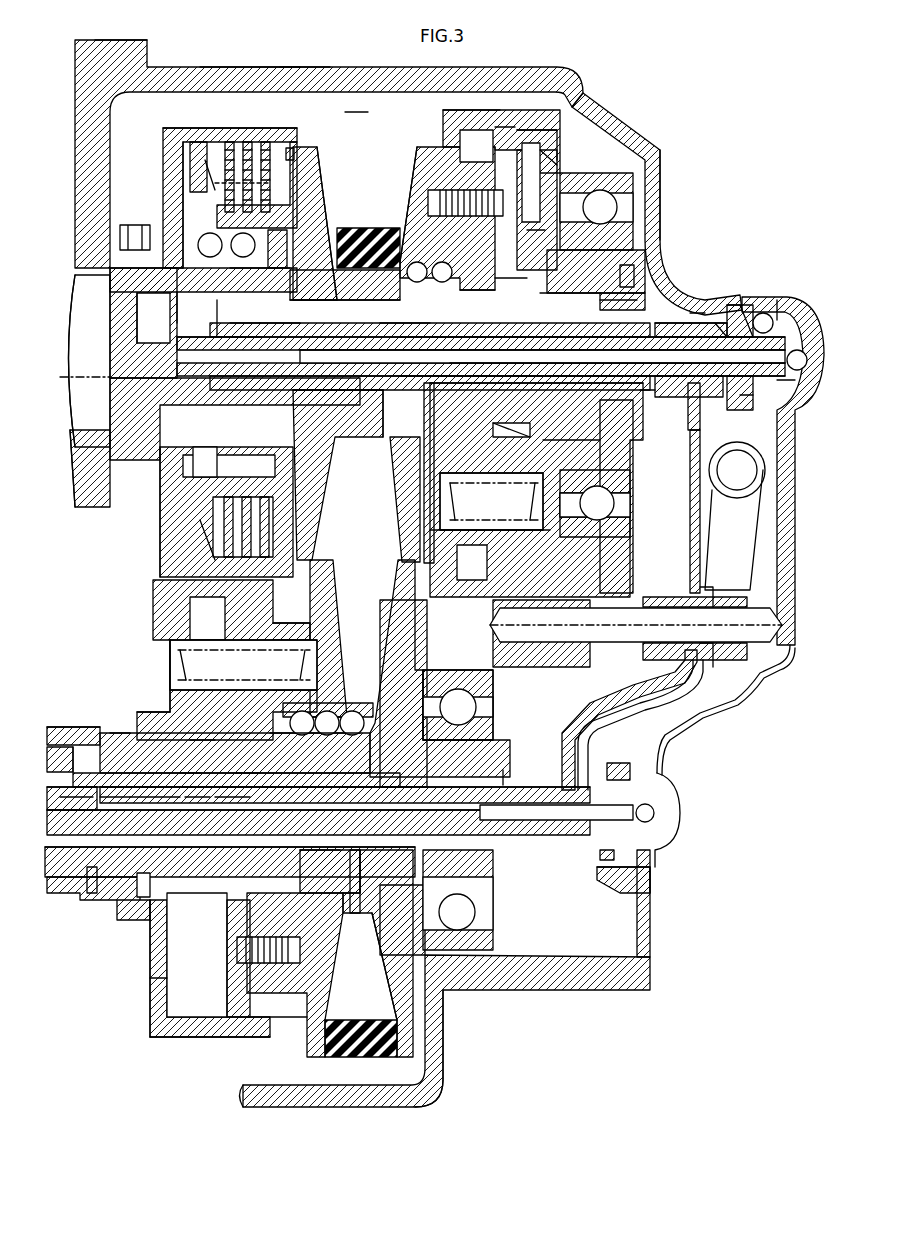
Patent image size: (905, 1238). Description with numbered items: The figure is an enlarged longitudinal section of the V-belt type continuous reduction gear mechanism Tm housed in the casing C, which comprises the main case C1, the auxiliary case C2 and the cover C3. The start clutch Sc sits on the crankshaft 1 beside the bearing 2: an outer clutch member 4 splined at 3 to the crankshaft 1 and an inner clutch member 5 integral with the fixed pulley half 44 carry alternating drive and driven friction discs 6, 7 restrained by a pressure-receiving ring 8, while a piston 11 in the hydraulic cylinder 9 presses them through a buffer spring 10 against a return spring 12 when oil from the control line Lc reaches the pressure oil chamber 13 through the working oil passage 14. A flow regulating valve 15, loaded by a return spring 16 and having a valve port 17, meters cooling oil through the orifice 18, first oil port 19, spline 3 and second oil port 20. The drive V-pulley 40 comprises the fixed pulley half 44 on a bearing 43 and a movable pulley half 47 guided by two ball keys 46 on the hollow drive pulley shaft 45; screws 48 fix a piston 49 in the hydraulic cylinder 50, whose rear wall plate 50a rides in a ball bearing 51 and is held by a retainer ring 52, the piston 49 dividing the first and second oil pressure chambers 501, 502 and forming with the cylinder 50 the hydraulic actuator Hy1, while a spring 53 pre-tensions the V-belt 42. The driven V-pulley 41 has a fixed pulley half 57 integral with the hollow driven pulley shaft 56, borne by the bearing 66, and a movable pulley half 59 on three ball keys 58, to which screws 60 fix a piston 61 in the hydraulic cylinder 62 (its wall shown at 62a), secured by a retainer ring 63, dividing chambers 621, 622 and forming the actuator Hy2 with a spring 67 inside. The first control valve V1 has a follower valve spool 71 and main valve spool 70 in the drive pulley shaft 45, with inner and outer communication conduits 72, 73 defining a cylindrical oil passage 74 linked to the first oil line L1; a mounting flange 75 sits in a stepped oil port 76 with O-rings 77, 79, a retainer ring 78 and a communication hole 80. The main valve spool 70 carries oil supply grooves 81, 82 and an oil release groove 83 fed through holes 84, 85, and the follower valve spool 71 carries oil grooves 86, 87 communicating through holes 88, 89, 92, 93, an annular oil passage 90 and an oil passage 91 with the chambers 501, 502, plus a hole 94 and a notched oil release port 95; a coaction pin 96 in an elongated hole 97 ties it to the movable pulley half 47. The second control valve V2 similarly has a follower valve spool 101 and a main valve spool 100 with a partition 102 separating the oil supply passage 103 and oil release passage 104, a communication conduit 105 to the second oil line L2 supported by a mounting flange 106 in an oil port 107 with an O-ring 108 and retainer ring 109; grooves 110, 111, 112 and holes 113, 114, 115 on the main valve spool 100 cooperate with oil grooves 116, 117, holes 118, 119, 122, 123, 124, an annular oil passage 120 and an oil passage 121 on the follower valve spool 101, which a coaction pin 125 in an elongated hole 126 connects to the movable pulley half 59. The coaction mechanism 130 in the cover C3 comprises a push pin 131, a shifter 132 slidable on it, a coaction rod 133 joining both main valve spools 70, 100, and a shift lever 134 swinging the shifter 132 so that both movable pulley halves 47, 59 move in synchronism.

The main case C1 is at (125, 42).
The auxiliary case C2 is at (245, 70).
The casing C is at (288, 68).
The cover C3 is at (661, 180).
The continuous reduction gear mechanism Tm is at (356, 112).
The hydraulic actuator Hy1 is at (558, 110).
The hydraulic actuator Hy2 is at (148, 978).
The start clutch Sc is at (275, 128).
The first control valve V1 is at (688, 305).
The second control valve V2 is at (514, 780).
The first oil line L1 is at (775, 305).
The second oil line L2 is at (656, 816).
The control line Lc is at (805, 352).
The crankshaft 1 is at (91, 362).
The bearing 2 is at (79, 468).
The spline 3 is at (275, 330).
The outer clutch member 4 is at (196, 142).
The inner clutch member 5 is at (283, 228).
The drive friction discs 6 is at (265, 142).
The driven friction discs 7 is at (266, 183).
The pressure-receiving ring 8 is at (294, 153).
The hydraulic cylinder 9 is at (210, 165).
The dish-shaped buffer spring 10 is at (210, 540).
The piston 11 is at (183, 470).
The return spring 12 is at (207, 262).
The pressure oil chamber 13 is at (183, 183).
The working oil passage 14 is at (160, 360).
The flow regulating valve 15 is at (195, 310).
The return spring 16 is at (330, 400).
The valve port 17 is at (210, 352).
The orifice 18 is at (222, 318).
The first oil port 19 is at (243, 325).
The second oil port 20 is at (240, 283).
The drive V-pulley 40 is at (462, 108).
The driven V-pulley 41 is at (440, 1013).
The V-belt 42 is at (365, 228).
The bearing 43 is at (330, 290).
The fixed pulley half 44 is at (320, 187).
The drive pulley shaft 45 is at (410, 282).
The ball keys 46 is at (438, 283).
The movable pulley half 47 is at (415, 178).
The screws 48 is at (466, 217).
The piston 49 is at (503, 127).
The hydraulic cylinder 50 is at (512, 135).
The first oil pressure chamber 501 is at (486, 157).
The second oil pressure chamber 502 is at (533, 230).
The rear wall plate 50a is at (555, 160).
The ball bearing 51 is at (597, 250).
The retainer ring 52 is at (630, 283).
The spring 53 is at (443, 475).
The driven pulley shaft 56 is at (160, 890).
The fixed pulley half 57 is at (376, 960).
The ball keys 58 is at (327, 711).
The movable pulley half 59 is at (333, 988).
The screws 60 is at (275, 937).
The piston 61 is at (227, 998).
The hydraulic cylinder 62 is at (175, 1037).
The first oil pressure chamber 621 is at (256, 1020).
The second oil pressure chamber 622 is at (211, 940).
The cylinder flange 62a is at (152, 957).
The retainer ring 63 is at (92, 894).
The bearing 66 is at (460, 690).
The spring 67 is at (300, 625).
The main valve spool 70 is at (674, 325).
The follower valve spool 71 is at (658, 323).
The inner communication conduit 72 is at (405, 327).
The outer communication conduit 73 is at (716, 325).
The cylindrical oil passage 74 is at (688, 400).
The mounting flange 75 is at (752, 398).
The stepped oil port 76 is at (748, 305).
The O-ring 77 is at (743, 410).
The retainer ring 78 is at (735, 305).
The O-ring 79 is at (790, 385).
The communication hole 80 is at (772, 327).
The left oil supply groove 81 is at (465, 352).
The right oil supply groove 82 is at (575, 352).
The oil release groove 83 is at (625, 352).
The hole 84 is at (500, 352).
The hole 85 is at (592, 430).
The left oil groove 86 is at (508, 290).
The right oil groove 87 is at (575, 290).
The hole 88 is at (478, 290).
The hole 89 is at (490, 415).
The annular oil passage 90 is at (545, 420).
The oil passage 91 is at (490, 505).
The hole 92 is at (625, 305).
The hole 93 is at (565, 420).
The hole 94 is at (550, 290).
The notched oil release port 95 is at (646, 398).
The coaction pin 96 is at (424, 426).
The elongated hole 97 is at (385, 410).
The main valve spool 100 is at (540, 787).
The follower valve spool 101 is at (330, 780).
The partition 102 is at (113, 848).
The oil supply passage 103 is at (290, 785).
The oil release passage 104 is at (70, 825).
The communication conduit 105 is at (545, 822).
The mounting flange 106 is at (650, 792).
The oil port 107 is at (625, 867).
The O-ring 108 is at (621, 768).
The retainer ring 109 is at (600, 856).
The left oil supply groove 110 is at (165, 798).
The right oil supply groove 111 is at (225, 798).
The oil release groove 112 is at (78, 791).
The hole 113 is at (130, 798).
The hole 114 is at (198, 798).
The hole 115 is at (95, 800).
The left oil groove 116 is at (92, 752).
The right oil groove 117 is at (240, 772).
The hole 118 is at (195, 775).
The hole 119 is at (200, 748).
The annular oil passage 120 is at (210, 700).
The oil passage 121 is at (258, 663).
The hole 122 is at (118, 748).
The hole 123 is at (150, 740).
The hole 124 is at (60, 745).
The coaction pin 125 is at (361, 862).
The elongated hole 126 is at (315, 860).
The coaction mechanism 130 is at (712, 672).
The push pin 131 is at (615, 645).
The shifter 132 is at (728, 598).
The coaction rod 133 is at (690, 550).
The shift lever 134 is at (742, 540).